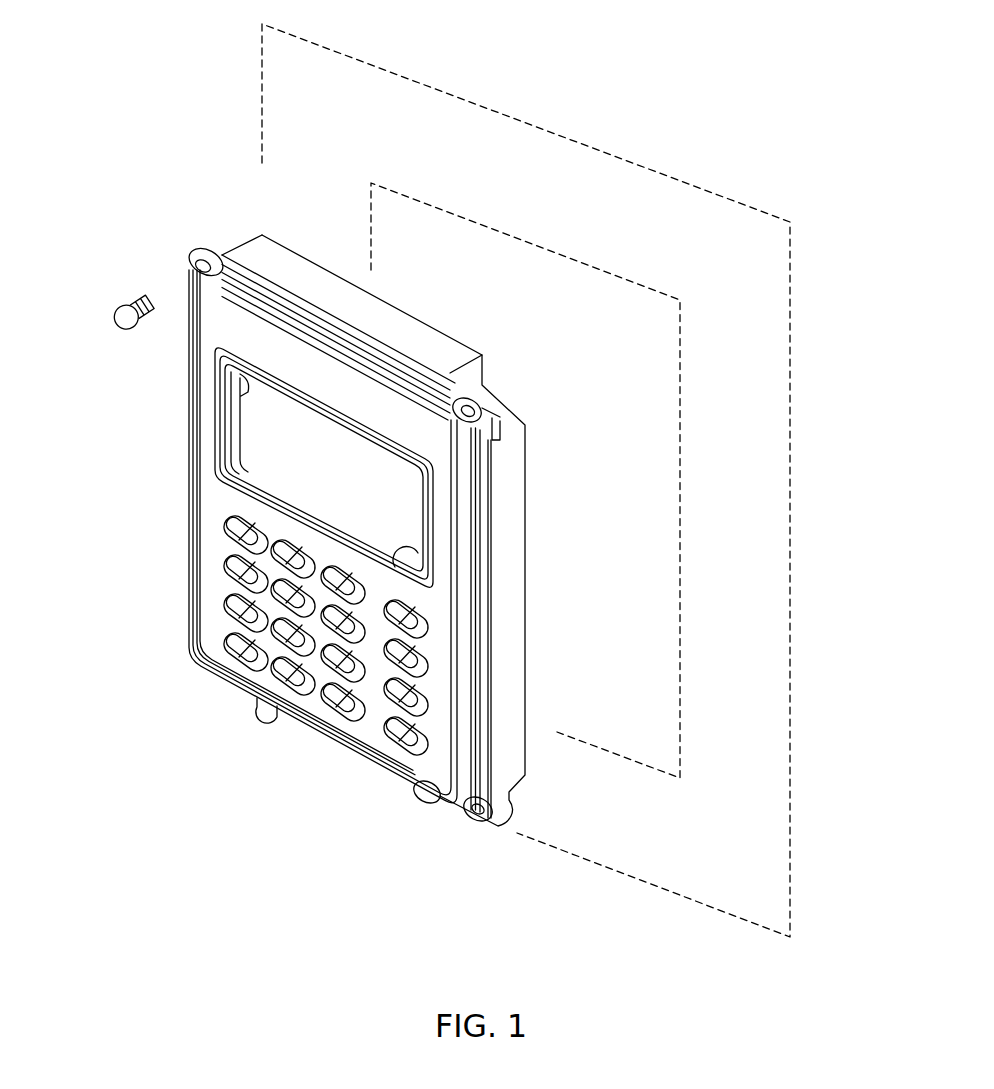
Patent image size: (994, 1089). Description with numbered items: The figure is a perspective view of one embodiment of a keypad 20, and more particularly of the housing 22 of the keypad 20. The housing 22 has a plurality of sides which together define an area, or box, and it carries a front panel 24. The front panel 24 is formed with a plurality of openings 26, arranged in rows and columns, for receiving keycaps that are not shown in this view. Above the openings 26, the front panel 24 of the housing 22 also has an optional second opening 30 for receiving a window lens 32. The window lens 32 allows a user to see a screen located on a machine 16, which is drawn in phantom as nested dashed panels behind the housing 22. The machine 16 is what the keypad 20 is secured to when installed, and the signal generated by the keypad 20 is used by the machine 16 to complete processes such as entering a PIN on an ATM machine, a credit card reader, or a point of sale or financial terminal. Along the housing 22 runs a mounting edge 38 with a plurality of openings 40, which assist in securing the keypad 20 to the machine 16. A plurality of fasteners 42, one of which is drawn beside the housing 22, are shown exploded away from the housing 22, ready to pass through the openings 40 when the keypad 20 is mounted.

The machine 16 is at (768, 668).
The keypad 20 is at (670, 139).
The housing 22 is at (510, 667).
The front panel 24 is at (437, 773).
The openings 26 is at (230, 663).
The second opening 30 is at (223, 481).
The window lens 32 is at (338, 487).
The mounting edge 38 is at (470, 500).
The openings 40 is at (200, 262).
The fasteners 42 is at (120, 312).